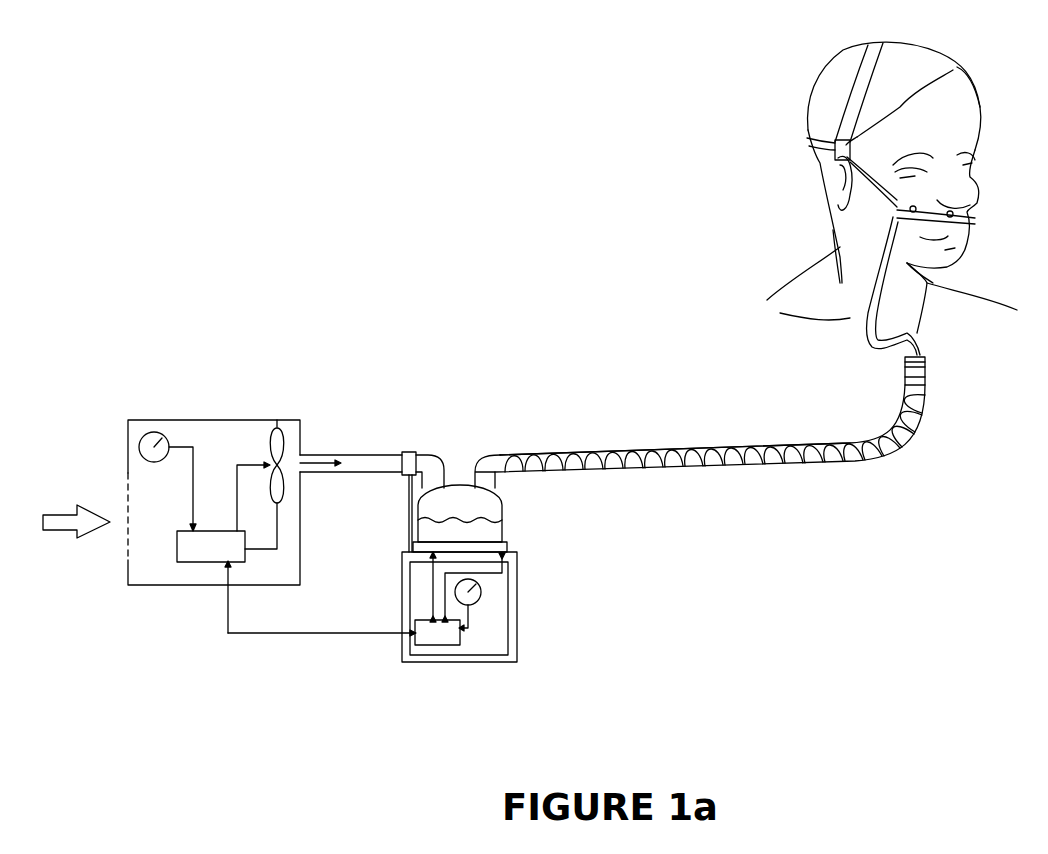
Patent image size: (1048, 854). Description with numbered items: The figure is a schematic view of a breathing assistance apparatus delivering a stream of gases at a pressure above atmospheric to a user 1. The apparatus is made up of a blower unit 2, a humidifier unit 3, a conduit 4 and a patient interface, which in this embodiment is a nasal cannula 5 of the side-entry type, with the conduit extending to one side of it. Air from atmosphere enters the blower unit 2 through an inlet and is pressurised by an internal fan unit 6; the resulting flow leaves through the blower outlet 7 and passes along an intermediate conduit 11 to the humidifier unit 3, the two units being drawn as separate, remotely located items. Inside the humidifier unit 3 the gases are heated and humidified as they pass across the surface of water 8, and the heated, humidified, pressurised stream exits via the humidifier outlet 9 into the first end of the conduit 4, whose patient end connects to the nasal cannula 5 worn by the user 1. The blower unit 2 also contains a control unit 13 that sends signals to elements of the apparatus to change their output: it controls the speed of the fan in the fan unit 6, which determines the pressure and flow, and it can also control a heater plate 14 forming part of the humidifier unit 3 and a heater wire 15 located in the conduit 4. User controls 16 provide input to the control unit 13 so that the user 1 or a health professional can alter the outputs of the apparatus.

The user 1 is at (850, 220).
The blower unit 2 is at (215, 419).
The humidifier unit 3 is at (476, 523).
The conduit 4 is at (697, 468).
The nasal cannula 5 is at (973, 218).
The fan unit 6 is at (280, 430).
The blower outlet 7 is at (301, 453).
The water 8 is at (487, 530).
The humidifier outlet 9 is at (478, 478).
The intermediate conduit 11 is at (360, 452).
The control unit 13 is at (195, 563).
The heater plate 14 is at (508, 543).
The heater wire 15 is at (718, 447).
The user controls 16 is at (139, 435).